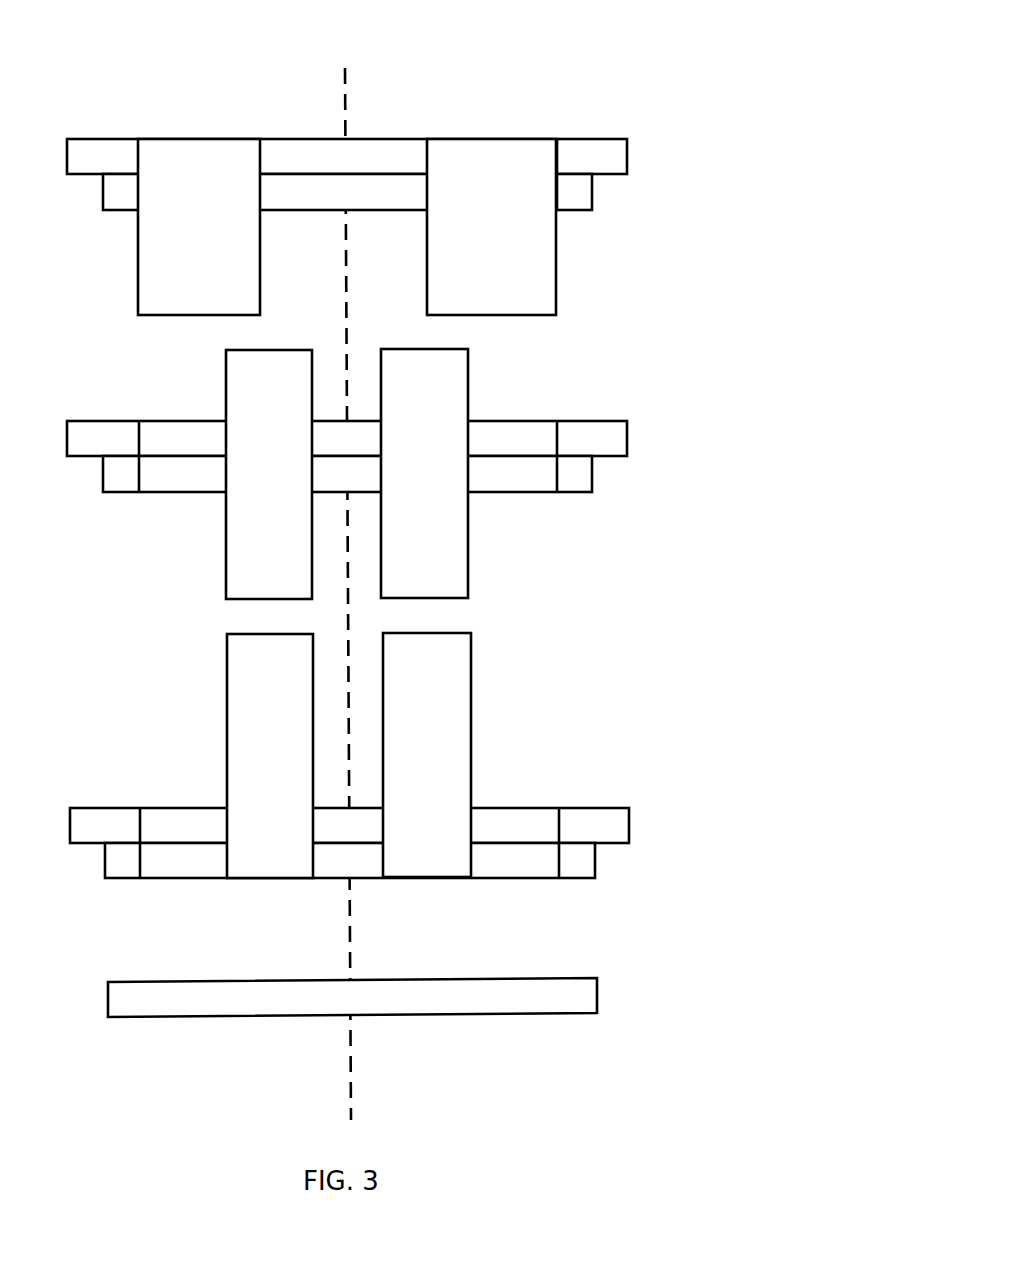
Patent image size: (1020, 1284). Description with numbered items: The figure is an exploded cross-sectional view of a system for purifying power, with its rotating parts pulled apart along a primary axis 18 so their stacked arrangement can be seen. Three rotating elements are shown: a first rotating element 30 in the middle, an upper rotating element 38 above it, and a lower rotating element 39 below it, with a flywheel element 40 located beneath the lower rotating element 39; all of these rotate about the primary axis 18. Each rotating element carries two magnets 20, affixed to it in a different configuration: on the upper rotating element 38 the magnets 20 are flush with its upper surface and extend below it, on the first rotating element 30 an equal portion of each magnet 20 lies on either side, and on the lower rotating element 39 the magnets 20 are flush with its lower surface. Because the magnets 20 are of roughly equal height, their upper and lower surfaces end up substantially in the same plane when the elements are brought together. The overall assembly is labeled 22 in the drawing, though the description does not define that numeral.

The primary axis 18 is at (345, 103).
The magnets 20 is at (347, 508).
The ballast assembly 22 is at (389, 509).
The first rotating element 30 is at (608, 437).
The upper rotating element 38 is at (607, 157).
The lower rotating element 39 is at (612, 824).
The flywheel element 40 is at (597, 992).